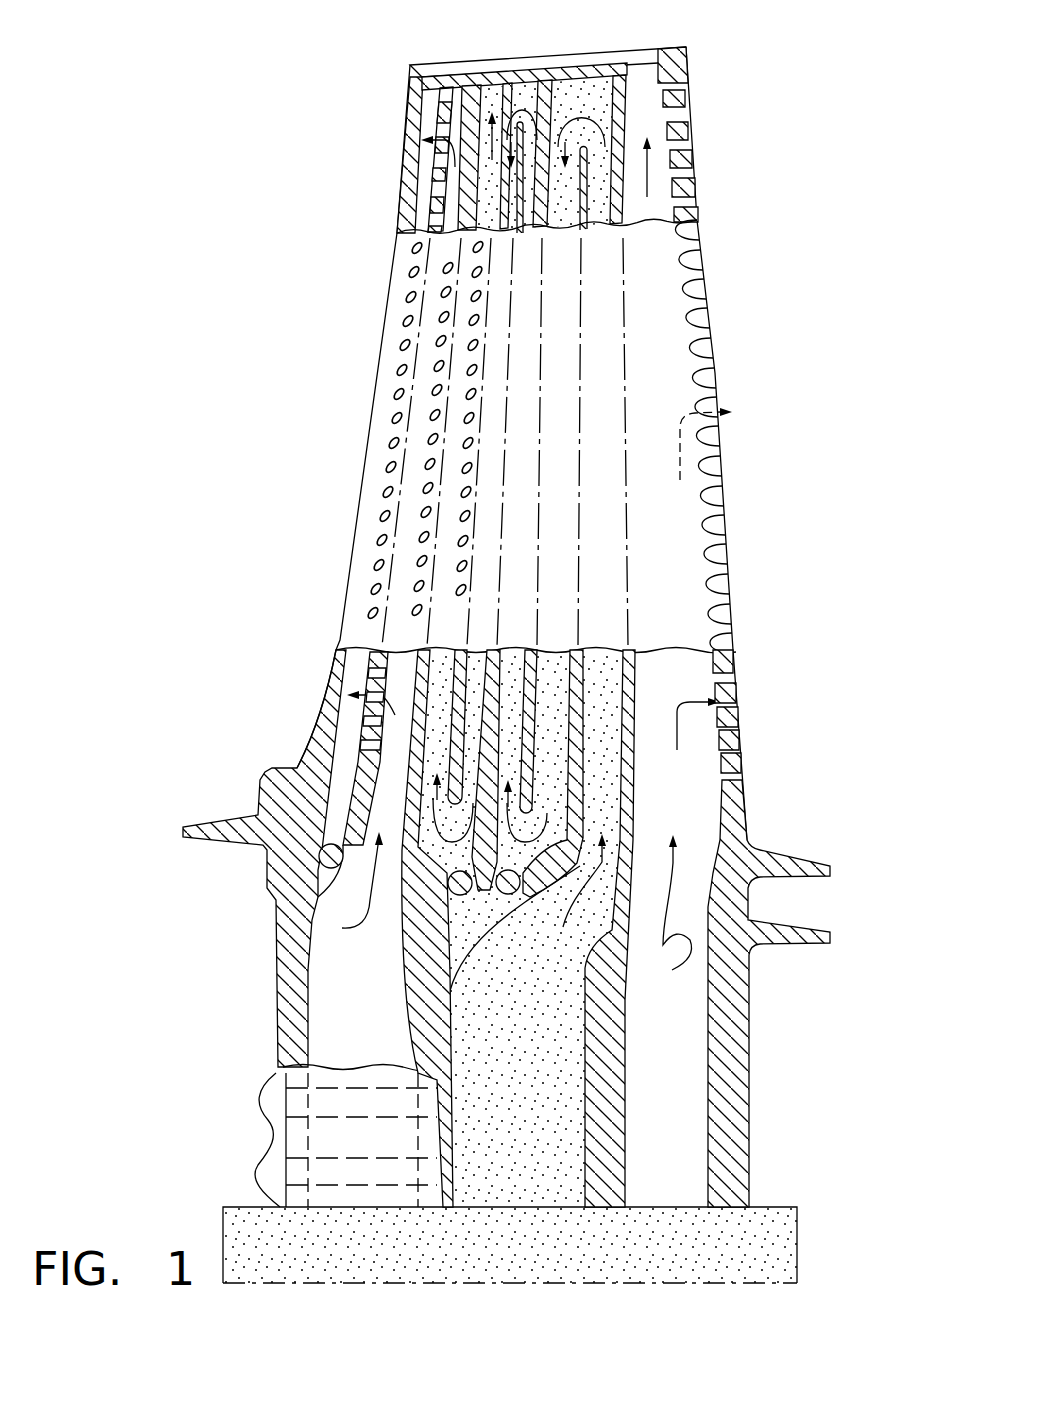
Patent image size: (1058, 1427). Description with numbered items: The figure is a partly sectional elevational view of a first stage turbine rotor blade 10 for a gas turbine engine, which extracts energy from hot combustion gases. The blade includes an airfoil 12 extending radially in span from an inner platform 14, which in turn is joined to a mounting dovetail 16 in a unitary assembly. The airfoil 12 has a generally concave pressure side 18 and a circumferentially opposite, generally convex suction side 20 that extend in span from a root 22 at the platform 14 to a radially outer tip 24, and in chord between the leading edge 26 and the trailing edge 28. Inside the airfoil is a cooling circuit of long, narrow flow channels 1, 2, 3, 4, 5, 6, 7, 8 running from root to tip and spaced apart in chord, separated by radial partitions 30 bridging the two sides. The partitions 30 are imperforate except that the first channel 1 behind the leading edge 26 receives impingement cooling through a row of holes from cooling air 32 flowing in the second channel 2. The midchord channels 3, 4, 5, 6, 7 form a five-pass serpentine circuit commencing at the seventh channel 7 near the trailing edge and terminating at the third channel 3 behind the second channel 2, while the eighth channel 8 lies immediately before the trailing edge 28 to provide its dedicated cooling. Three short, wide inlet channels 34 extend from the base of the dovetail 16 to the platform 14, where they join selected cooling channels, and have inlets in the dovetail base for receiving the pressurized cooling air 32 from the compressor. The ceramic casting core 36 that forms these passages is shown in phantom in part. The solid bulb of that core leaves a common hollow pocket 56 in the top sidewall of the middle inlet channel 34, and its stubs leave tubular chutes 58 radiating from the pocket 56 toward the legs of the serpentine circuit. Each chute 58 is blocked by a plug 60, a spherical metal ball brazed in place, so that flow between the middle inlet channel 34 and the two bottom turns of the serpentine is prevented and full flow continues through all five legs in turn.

The first stage turbine rotor blade 10 is at (712, 125).
The airfoil 12 is at (355, 543).
The inner platform 14 is at (272, 770).
The mounting dovetail 16 is at (257, 1085).
The pressure side 18 is at (574, 392).
The suction side 20 is at (393, 410).
The root 22 is at (297, 766).
The tip 24 is at (522, 54).
The leading edge 26 is at (360, 495).
The trailing edge 28 is at (712, 309).
The radial partitions 30 is at (613, 233).
The cooling air 32 is at (583, 117).
The inlet channels 34 is at (378, 1017).
The ceramic casting core 36 is at (577, 1032).
The hollow pocket 56 is at (463, 933).
The chutes 58 is at (455, 916).
The plugs 60 is at (503, 900).
The first channel 1 is at (360, 657).
The second channel 2 is at (412, 658).
The third channel 3 is at (441, 655).
The fourth channel 4 is at (473, 655).
The fifth channel 5 is at (511, 655).
The sixth channel 6 is at (553, 658).
The seventh channel 7 is at (599, 658).
The eighth channel 8 is at (668, 658).